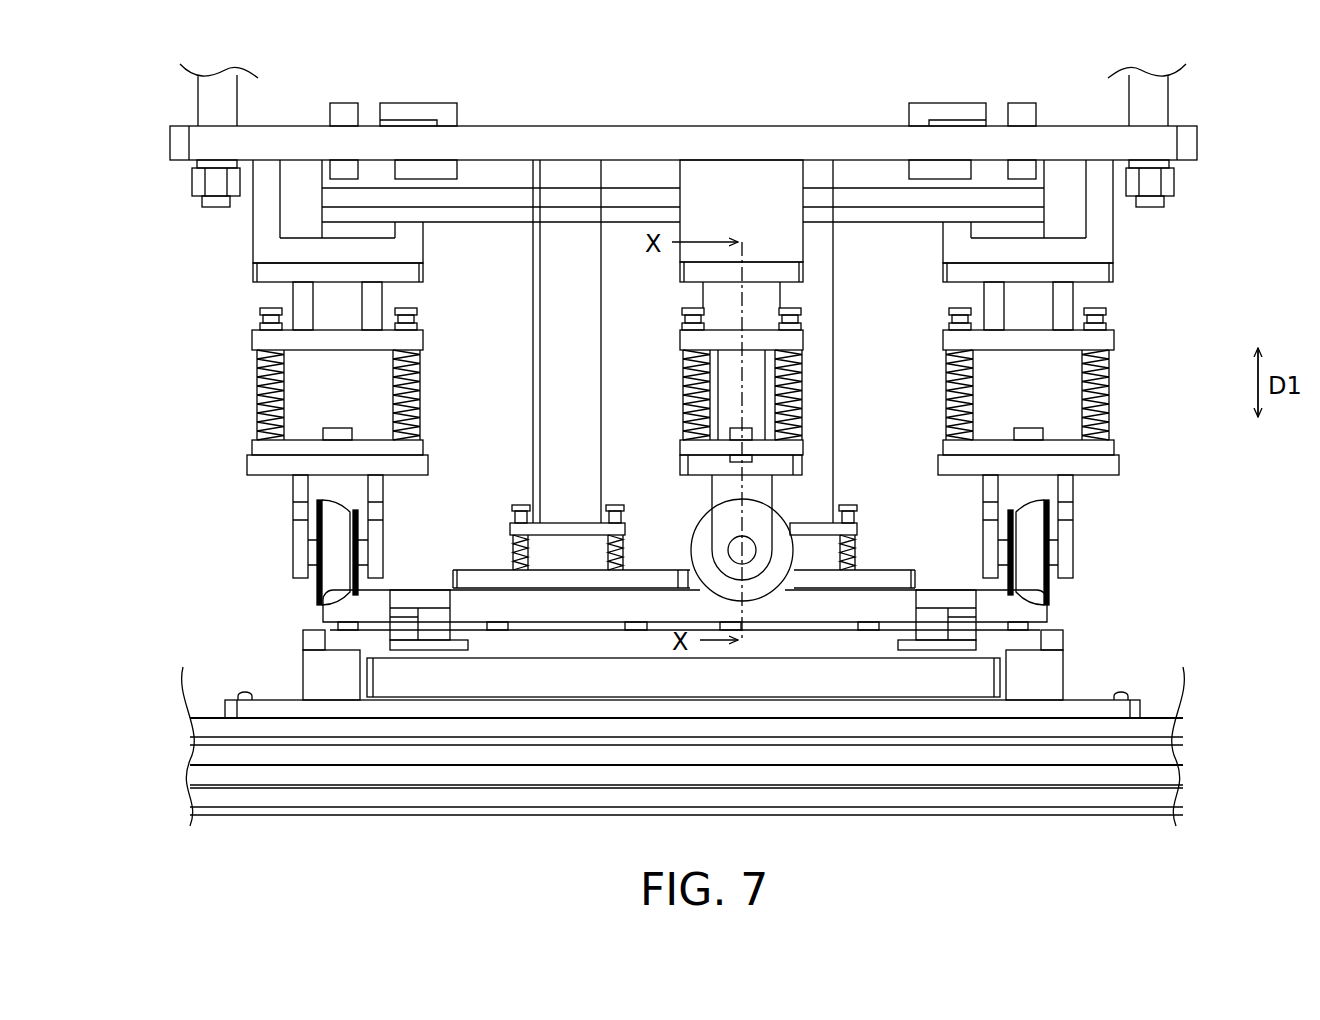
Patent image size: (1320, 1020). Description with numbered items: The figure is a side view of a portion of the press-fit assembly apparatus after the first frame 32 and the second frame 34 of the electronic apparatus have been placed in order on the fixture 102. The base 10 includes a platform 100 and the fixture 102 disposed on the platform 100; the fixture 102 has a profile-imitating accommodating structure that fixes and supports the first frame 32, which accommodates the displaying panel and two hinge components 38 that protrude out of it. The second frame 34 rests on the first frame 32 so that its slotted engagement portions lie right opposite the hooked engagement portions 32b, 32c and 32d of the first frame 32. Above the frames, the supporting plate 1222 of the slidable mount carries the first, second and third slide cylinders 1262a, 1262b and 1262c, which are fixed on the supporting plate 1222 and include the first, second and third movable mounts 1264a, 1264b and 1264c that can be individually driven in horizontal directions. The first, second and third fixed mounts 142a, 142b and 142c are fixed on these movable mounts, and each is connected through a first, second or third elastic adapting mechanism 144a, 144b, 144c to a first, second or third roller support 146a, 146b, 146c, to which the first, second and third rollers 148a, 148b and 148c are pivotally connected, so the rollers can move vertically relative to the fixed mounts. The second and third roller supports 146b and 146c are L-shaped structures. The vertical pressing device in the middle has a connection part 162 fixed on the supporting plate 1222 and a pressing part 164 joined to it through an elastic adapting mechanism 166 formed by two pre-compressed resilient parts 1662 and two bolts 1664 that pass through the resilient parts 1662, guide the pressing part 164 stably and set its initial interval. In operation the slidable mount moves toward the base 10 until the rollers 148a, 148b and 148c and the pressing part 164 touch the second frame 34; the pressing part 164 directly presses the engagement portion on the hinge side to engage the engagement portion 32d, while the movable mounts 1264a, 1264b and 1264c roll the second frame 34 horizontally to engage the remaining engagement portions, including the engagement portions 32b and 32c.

The base 10 is at (709, 707).
The platform 100 is at (1080, 730).
The fixture 102 is at (1038, 670).
The first frame 32 is at (676, 712).
The engagement portion 32b is at (1050, 630).
The engagement portion 32c is at (315, 632).
The engagement portion 32d is at (630, 636).
The second frame 34 is at (333, 612).
The hinge components 38 is at (457, 650).
The first fixed mount 142a is at (755, 297).
The second fixed mount 142b is at (305, 300).
The third fixed mount 142c is at (1060, 297).
The first elastic adapting mechanism 144a is at (805, 382).
The second elastic adapting mechanism 144b is at (250, 385).
The third elastic adapting mechanism 144c is at (1112, 385).
The first roller support 146a is at (830, 520).
The second roller support 146b is at (300, 488).
The third roller support 146c is at (1068, 487).
The first roller 148a is at (762, 595).
The second roller 148b is at (332, 580).
The third roller 148c is at (1035, 552).
The connection part 162 is at (825, 412).
The pressing part 164 is at (880, 572).
The elastic adapting mechanism 166 is at (855, 510).
The resilient parts 1662 is at (620, 545).
The bolts 1664 is at (612, 505).
The supporting plate 1222 is at (498, 138).
The first slide cylinder 1262a is at (645, 198).
The second slide cylinder 1262b is at (375, 178).
The third slide cylinder 1262c is at (1070, 215).
The first movable mount 1264a is at (748, 212).
The second movable mount 1264b is at (265, 232).
The third movable mount 1264c is at (1095, 250).